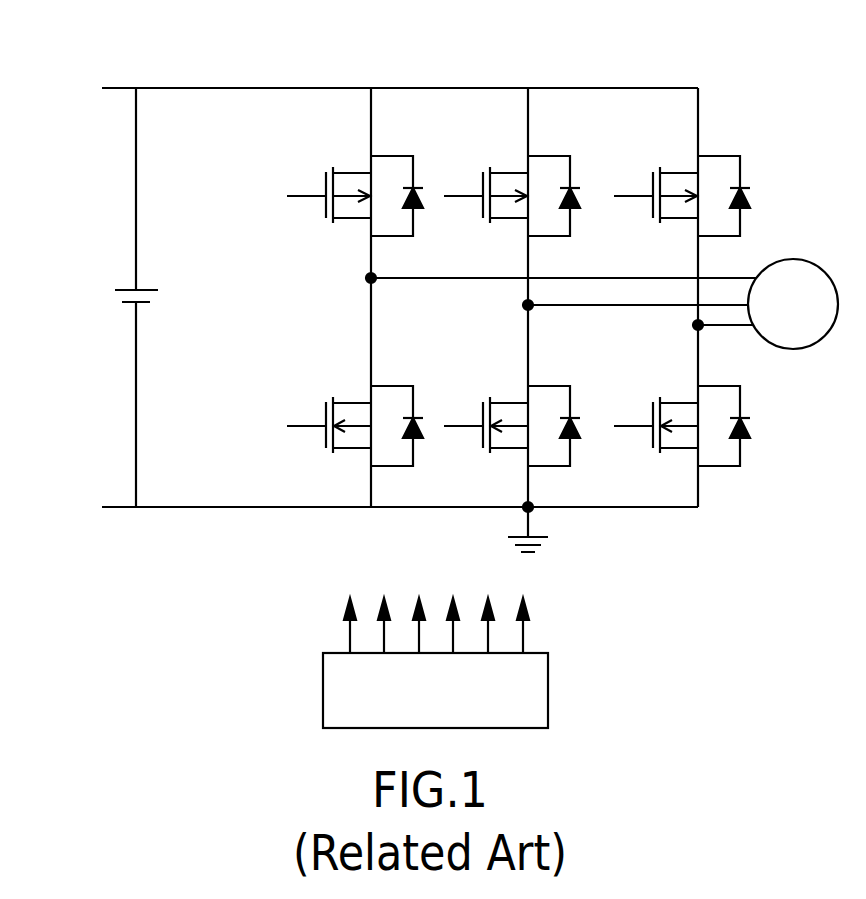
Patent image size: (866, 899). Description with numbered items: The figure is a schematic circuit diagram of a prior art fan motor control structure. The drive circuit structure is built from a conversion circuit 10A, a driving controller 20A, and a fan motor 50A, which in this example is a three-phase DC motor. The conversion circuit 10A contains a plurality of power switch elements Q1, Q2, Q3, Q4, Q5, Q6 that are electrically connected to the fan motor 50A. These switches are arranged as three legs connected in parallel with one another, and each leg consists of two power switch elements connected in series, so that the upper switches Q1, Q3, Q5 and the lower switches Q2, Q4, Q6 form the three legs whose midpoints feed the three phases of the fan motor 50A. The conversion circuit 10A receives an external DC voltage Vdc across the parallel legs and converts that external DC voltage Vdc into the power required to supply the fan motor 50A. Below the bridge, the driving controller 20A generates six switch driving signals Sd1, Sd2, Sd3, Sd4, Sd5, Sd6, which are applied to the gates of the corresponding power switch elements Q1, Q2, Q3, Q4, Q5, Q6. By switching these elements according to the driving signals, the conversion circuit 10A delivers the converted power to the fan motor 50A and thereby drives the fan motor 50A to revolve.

The conversion circuit 10A is at (440, 286).
The driving controller 20A is at (502, 646).
The fan motor 50A is at (792, 268).
The external DC voltage Vdc is at (100, 297).
The power switch element Q1 is at (355, 177).
The power switch element Q2 is at (355, 407).
The power switch element Q3 is at (512, 177).
The power switch element Q4 is at (512, 407).
The power switch element Q5 is at (682, 177).
The power switch element Q6 is at (682, 407).
The switch driving signal Sd1 is at (348, 614).
The switch driving signal Sd2 is at (383, 609).
The switch driving signal Sd3 is at (418, 614).
The switch driving signal Sd4 is at (453, 609).
The switch driving signal Sd5 is at (488, 614).
The switch driving signal Sd6 is at (523, 609).